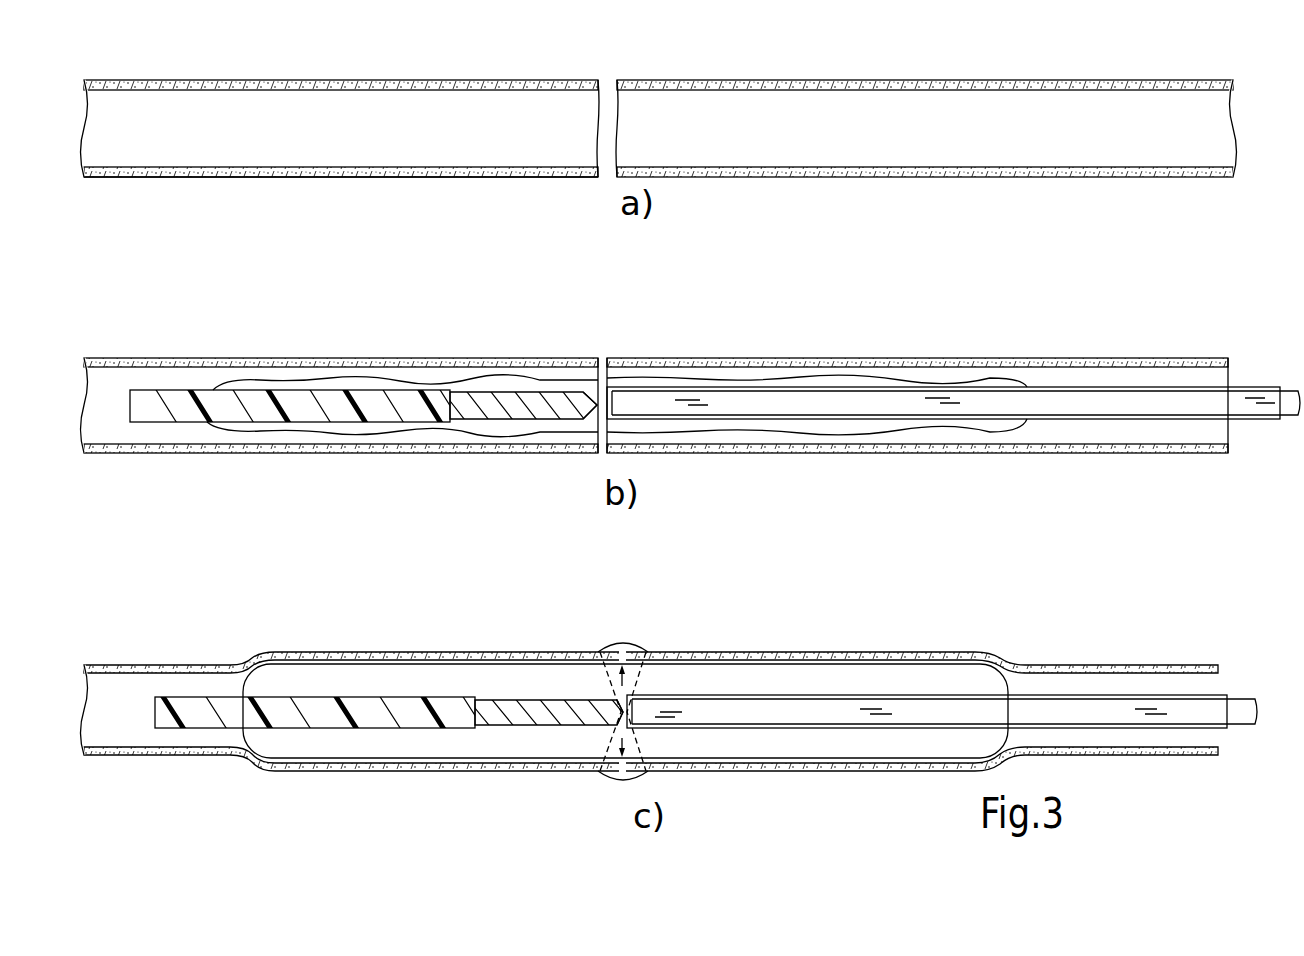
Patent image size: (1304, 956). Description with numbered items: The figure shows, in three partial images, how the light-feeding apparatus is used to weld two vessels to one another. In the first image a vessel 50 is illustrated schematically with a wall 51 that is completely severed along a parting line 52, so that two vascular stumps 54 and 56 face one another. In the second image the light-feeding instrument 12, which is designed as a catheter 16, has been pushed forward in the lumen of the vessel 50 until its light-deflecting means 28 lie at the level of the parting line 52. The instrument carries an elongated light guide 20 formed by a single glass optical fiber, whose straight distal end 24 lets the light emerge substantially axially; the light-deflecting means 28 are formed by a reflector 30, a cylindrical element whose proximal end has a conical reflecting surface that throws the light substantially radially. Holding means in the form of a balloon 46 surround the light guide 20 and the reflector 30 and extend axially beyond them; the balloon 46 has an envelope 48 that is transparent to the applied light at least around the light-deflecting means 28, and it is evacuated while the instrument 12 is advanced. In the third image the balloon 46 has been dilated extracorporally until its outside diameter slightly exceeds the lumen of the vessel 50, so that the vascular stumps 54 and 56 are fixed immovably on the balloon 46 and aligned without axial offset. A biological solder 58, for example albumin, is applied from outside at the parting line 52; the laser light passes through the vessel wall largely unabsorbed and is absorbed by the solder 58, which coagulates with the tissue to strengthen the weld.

The light-feeding instrument 12 is at (1040, 378).
The catheter 16 is at (200, 378).
The light guide 20 is at (1097, 405).
The distal end of the light guide 24 is at (620, 405).
The light-deflecting means 28 is at (583, 380).
The reflector 30 is at (485, 408).
The balloon 46 is at (420, 434).
The envelope 48 is at (320, 434).
The vessel 50 is at (770, 58).
The wall 51 is at (490, 178).
The parting line 52 is at (605, 88).
The vascular stump 54 is at (390, 147).
The vascular stump 56 is at (775, 147).
The biological solder 58 is at (636, 645).